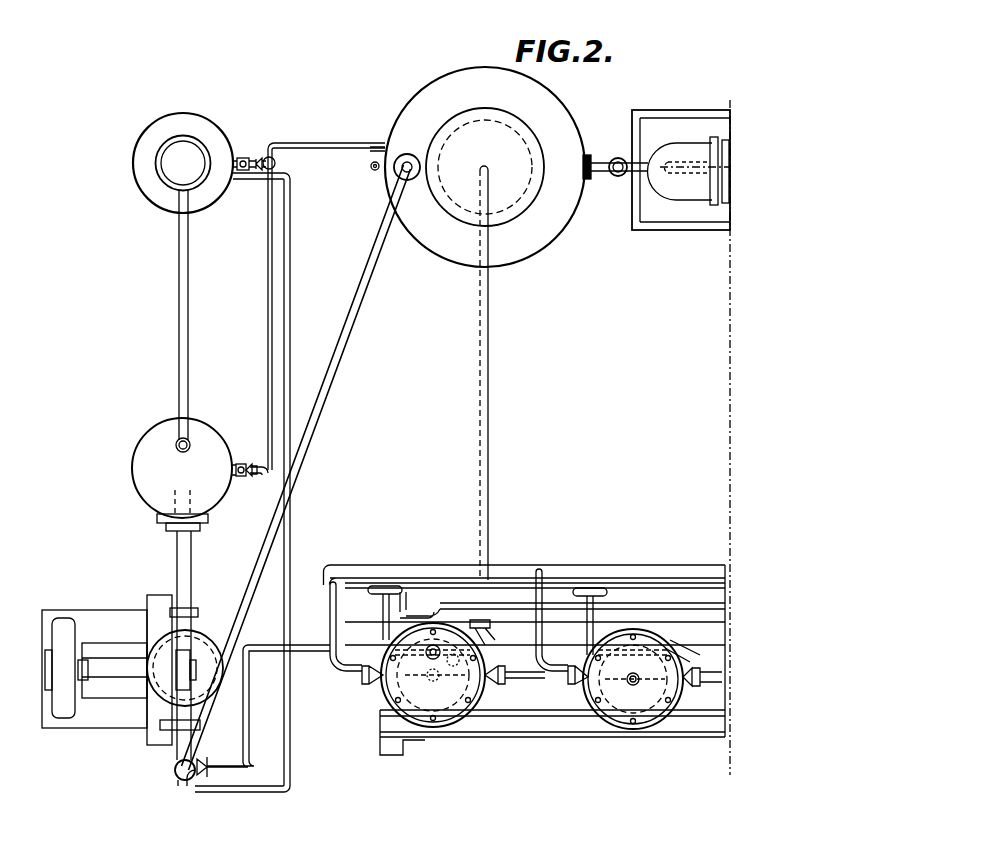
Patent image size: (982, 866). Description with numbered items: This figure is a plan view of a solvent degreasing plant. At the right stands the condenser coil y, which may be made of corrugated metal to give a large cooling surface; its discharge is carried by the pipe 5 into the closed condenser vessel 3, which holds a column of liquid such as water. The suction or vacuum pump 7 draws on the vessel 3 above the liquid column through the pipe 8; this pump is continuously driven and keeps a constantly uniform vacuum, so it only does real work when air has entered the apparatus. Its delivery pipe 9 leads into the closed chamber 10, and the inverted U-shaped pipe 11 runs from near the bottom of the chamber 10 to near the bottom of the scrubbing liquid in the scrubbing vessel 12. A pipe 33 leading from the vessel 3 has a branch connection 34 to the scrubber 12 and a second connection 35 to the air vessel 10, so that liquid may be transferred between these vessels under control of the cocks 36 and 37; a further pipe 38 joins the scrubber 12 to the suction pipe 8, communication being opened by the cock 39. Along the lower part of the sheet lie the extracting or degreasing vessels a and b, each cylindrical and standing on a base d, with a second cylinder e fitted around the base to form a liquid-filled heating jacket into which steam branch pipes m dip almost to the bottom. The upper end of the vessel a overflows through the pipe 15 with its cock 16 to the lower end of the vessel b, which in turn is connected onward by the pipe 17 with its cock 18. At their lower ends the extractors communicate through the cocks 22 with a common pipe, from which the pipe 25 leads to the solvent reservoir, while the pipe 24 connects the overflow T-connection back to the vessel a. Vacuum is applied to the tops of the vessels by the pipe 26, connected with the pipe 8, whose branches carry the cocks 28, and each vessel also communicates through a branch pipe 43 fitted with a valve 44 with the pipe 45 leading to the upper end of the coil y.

The closed vessel 3 is at (552, 228).
The pipe 5 is at (612, 173).
The condenser coil y is at (681, 185).
The suction or vacuum pump 7 is at (196, 636).
The pipe 8 is at (296, 460).
The delivery pipe 9 is at (184, 549).
The closed chamber 10 is at (204, 428).
The inverted U-shaped pipe 11 is at (188, 304).
The scrubbing vessel 12 is at (211, 196).
The overflow pipe 15 is at (521, 680).
The cock 16 is at (486, 680).
The pipe 17 is at (712, 687).
The cock 18 is at (694, 685).
The cocks 22 is at (433, 691).
The pipe 24 is at (612, 612).
The pipe 25 is at (487, 428).
The pipe 26 is at (244, 660).
The cock 28 is at (683, 658).
The pipe 33 is at (333, 150).
The branch connection 34 is at (263, 157).
The second connection 35 is at (258, 477).
The cock 36 is at (243, 157).
The cock 37 is at (240, 463).
The pipe 38 is at (290, 612).
The cock 39 is at (178, 775).
The branch pipes 43 is at (542, 630).
The valves 44 is at (574, 682).
The pipe 45 is at (498, 574).
The extracting or degreasing vessel a is at (455, 712).
The extracting or degreasing vessel b is at (645, 716).
The base d is at (548, 727).
The second cylinder e is at (670, 722).
The branch pipes m is at (600, 628).